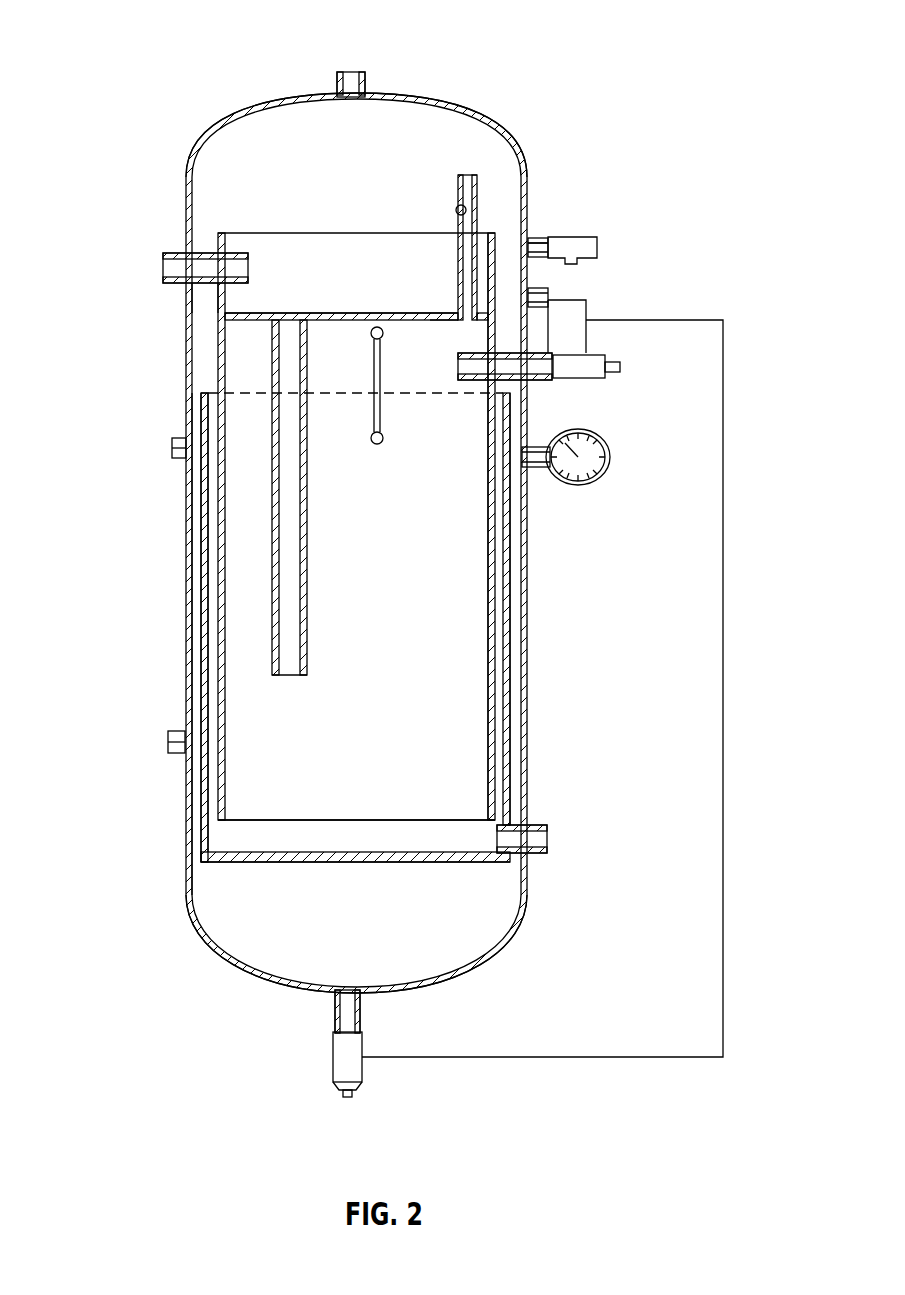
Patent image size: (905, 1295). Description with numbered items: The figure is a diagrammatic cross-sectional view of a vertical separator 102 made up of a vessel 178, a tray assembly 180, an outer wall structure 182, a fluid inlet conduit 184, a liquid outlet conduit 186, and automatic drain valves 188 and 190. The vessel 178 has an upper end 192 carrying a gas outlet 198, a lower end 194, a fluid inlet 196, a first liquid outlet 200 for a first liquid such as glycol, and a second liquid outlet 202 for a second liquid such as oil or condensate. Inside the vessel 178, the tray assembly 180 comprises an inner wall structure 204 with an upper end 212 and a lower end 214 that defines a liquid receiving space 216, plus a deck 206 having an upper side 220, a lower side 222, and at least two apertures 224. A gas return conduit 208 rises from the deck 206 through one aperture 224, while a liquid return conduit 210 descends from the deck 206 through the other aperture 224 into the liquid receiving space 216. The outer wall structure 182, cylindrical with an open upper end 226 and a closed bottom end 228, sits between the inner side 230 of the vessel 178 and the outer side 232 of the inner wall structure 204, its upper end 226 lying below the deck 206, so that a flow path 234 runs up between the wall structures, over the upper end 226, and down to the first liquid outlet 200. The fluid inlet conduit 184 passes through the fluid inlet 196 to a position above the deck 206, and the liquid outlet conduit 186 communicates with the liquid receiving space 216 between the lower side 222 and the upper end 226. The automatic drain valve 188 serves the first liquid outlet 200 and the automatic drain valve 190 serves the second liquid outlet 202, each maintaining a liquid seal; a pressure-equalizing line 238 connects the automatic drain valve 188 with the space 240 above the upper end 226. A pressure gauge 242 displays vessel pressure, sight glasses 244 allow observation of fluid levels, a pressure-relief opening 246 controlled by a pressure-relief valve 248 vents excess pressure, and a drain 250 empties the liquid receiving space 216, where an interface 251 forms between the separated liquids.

The separator 102 is at (112, 50).
The vessel 178 is at (180, 330).
The tray assembly 180 is at (250, 308).
The outer wall structure 182 is at (520, 595).
The fluid inlet conduit 184 is at (210, 252).
The liquid outlet conduit 186 is at (549, 347).
The automatic drain valve 188 is at (363, 1072).
The automatic drain valve 190 is at (605, 364).
The upper end 192 is at (462, 108).
The lower end 194 is at (222, 962).
The fluid inlet 196 is at (163, 267).
The gas outlet 198 is at (352, 78).
The first liquid outlet 200 is at (333, 997).
The second liquid outlet 202 is at (545, 380).
The inner wall structure 204 is at (484, 493).
The deck 206 is at (352, 314).
The gas return conduit 208 is at (463, 176).
The liquid return conduit 210 is at (308, 572).
The upper end 212 is at (528, 245).
The lower end 214 is at (220, 821).
The liquid receiving space 216 is at (405, 725).
The upper side 220 is at (410, 314).
The lower side 222 is at (443, 320).
The apertures 224 is at (458, 208).
The upper end 226 is at (204, 392).
The bottom end 228 is at (206, 858).
The inner side 230 is at (197, 512).
The outer side 232 is at (216, 632).
The flow path 234 is at (512, 550).
The pressure-equalizing line 238 is at (724, 690).
The space 240 is at (275, 165).
The pressure gauge 242 is at (627, 505).
The sight glasses 244 is at (375, 345).
The pressure-relief opening 246 is at (537, 250).
The pressure-relief valve 248 is at (597, 247).
The drain 250 is at (548, 838).
The interface 251 is at (447, 397).